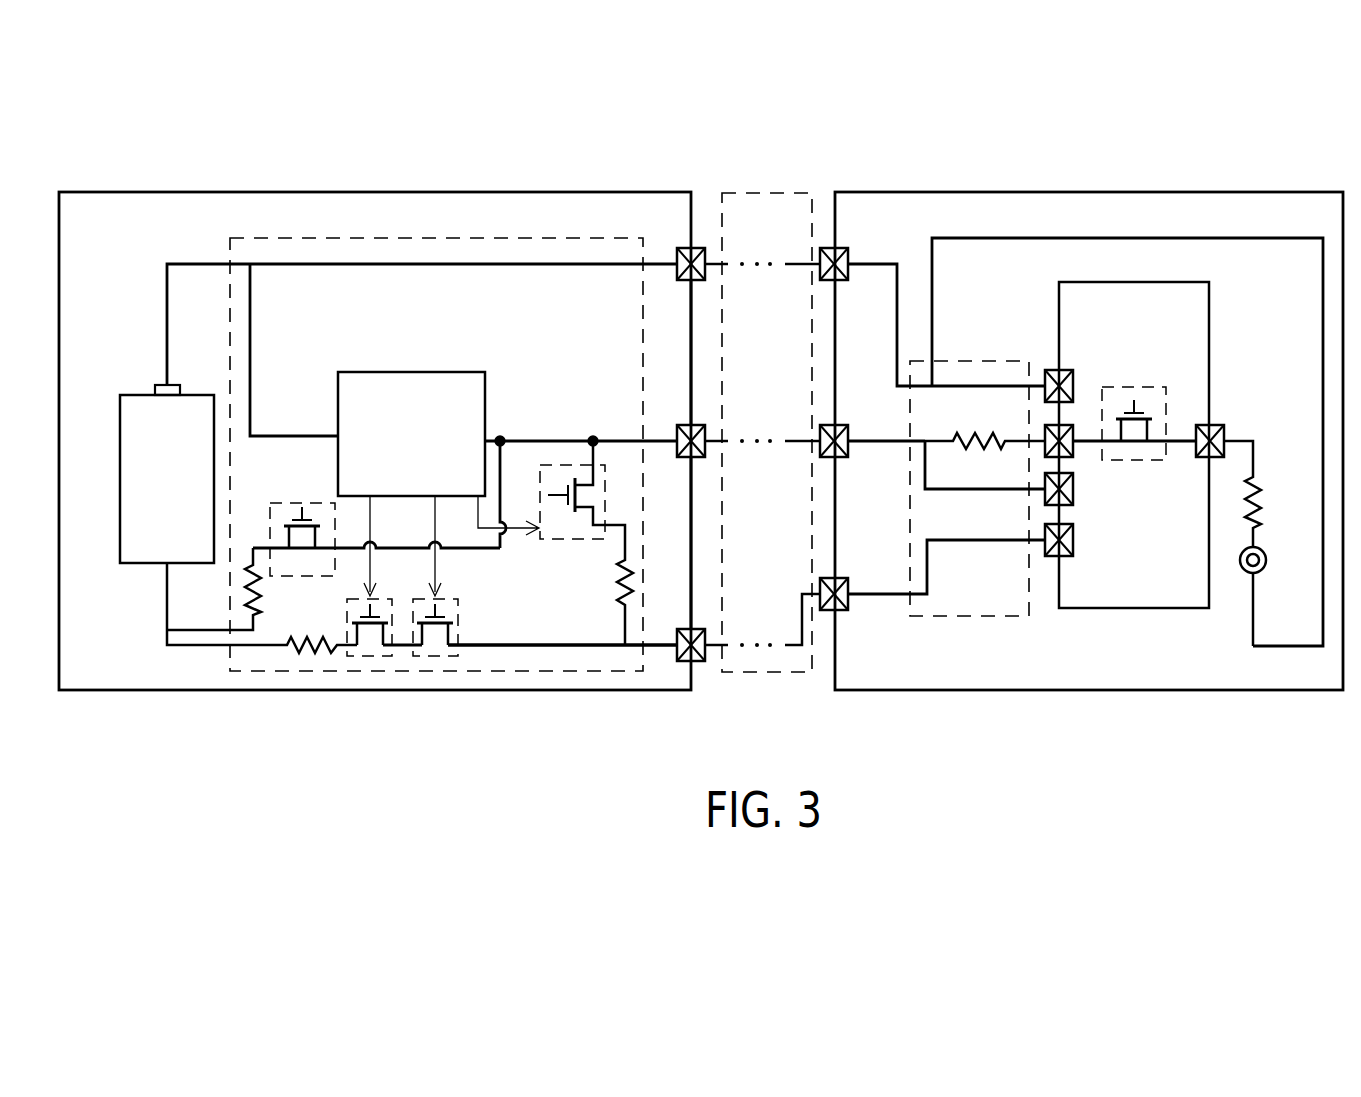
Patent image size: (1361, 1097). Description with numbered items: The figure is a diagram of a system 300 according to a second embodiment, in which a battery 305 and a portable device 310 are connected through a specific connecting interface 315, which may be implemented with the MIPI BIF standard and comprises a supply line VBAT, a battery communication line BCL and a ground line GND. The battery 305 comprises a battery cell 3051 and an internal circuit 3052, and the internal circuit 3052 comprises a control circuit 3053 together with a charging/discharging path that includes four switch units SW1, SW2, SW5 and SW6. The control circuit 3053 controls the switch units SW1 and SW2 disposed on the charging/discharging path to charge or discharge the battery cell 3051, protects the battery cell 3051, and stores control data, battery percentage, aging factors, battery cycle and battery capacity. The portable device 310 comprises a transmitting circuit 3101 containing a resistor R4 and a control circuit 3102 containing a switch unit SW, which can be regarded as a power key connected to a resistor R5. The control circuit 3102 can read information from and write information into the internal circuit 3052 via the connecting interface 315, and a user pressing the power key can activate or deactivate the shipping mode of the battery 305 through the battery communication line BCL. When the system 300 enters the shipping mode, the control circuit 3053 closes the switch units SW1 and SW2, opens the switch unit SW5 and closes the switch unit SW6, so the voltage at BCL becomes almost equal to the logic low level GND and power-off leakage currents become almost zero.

The system 300 is at (1181, 89).
The battery 305 is at (416, 192).
The portable device 310 is at (1223, 192).
The specific connecting interface 315 is at (764, 193).
The battery cell 3051 is at (148, 392).
The internal circuit 3052 is at (268, 237).
The control circuit 3053 is at (410, 372).
The transmitting circuit 3101 is at (977, 466).
The control circuit 3102 is at (1134, 422).
The switch unit SW1 is at (370, 657).
The switch unit SW2 is at (435, 657).
The switch unit SW5 is at (600, 540).
The switch unit SW6 is at (326, 503).
The switch unit SW is at (1145, 462).
The resistor R4 is at (985, 424).
The resistor R5 is at (1258, 543).
The supply line VBAT is at (693, 248).
The battery communication line BCL is at (700, 458).
The ground line GND is at (706, 664).